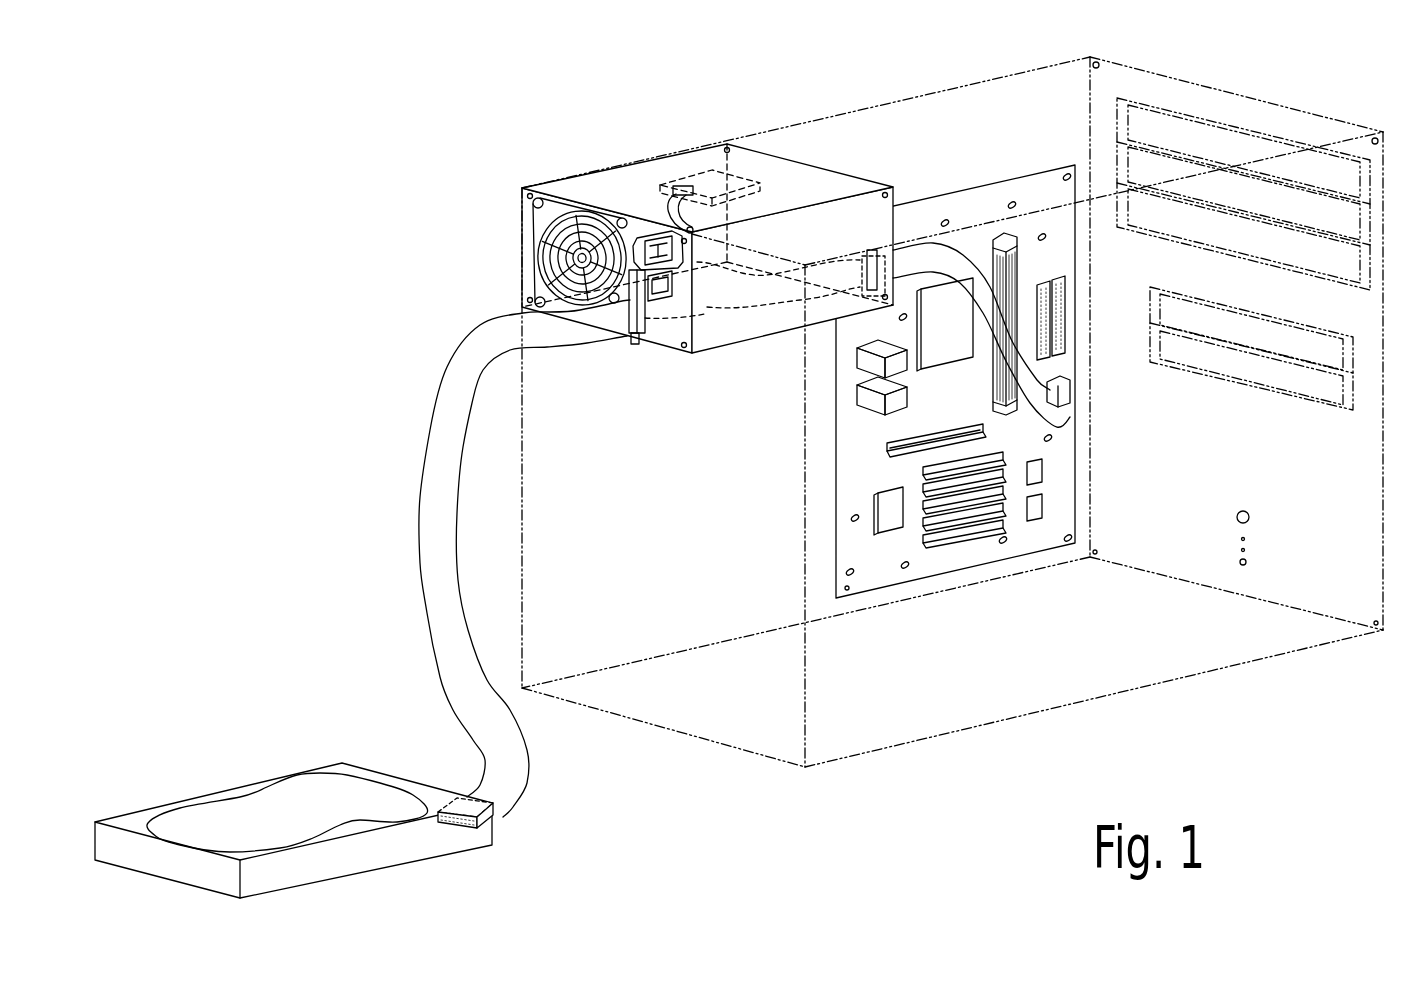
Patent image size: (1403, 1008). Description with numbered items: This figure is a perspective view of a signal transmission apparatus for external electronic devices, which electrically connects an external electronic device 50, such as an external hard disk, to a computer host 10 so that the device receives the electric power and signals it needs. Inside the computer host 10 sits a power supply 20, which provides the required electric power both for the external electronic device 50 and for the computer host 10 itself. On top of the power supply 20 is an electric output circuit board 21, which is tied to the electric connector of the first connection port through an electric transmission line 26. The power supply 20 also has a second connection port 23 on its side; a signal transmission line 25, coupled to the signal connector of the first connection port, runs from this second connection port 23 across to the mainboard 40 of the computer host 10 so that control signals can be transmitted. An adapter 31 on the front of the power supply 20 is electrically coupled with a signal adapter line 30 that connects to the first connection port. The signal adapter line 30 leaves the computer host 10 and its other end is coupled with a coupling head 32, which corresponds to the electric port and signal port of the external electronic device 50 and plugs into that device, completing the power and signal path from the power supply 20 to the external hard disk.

The computer host 10 is at (988, 73).
The power supply 20 is at (848, 170).
The electric output circuit board 21 is at (701, 177).
The second connection port 23 is at (875, 250).
The signal transmission line 25 is at (962, 263).
The electric transmission line 26 is at (663, 205).
The signal adapter line 30 is at (420, 458).
The adapter 31 is at (633, 350).
The coupling head 32 is at (503, 827).
The mainboard 40 is at (1003, 563).
The external electronic device 50 is at (250, 777).